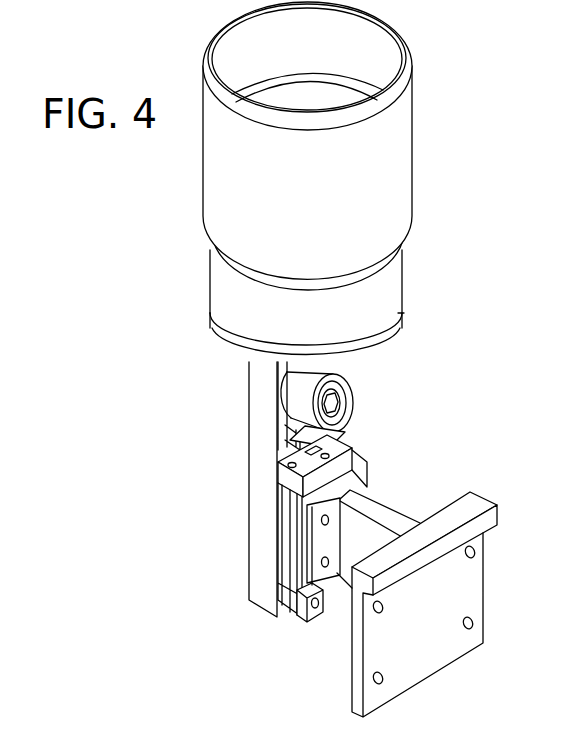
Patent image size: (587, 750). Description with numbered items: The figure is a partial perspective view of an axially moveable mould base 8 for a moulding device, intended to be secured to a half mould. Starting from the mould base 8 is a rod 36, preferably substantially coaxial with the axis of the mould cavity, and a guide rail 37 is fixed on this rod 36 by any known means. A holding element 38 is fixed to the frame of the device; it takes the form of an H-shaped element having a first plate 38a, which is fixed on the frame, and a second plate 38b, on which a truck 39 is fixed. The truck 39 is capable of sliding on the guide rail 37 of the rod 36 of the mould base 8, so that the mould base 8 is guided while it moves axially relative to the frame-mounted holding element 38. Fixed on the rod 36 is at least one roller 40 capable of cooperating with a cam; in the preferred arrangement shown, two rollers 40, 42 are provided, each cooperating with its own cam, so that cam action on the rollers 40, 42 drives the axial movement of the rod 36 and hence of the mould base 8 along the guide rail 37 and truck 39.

The mould base 8 is at (396, 200).
The rod 36 is at (257, 550).
The guide rail 37 is at (307, 620).
The holding element 38 is at (475, 505).
The first plate 38a is at (440, 645).
The second plate 38b is at (362, 473).
The truck 39 is at (280, 577).
The roller 40 is at (283, 415).
The roller 42 is at (287, 390).